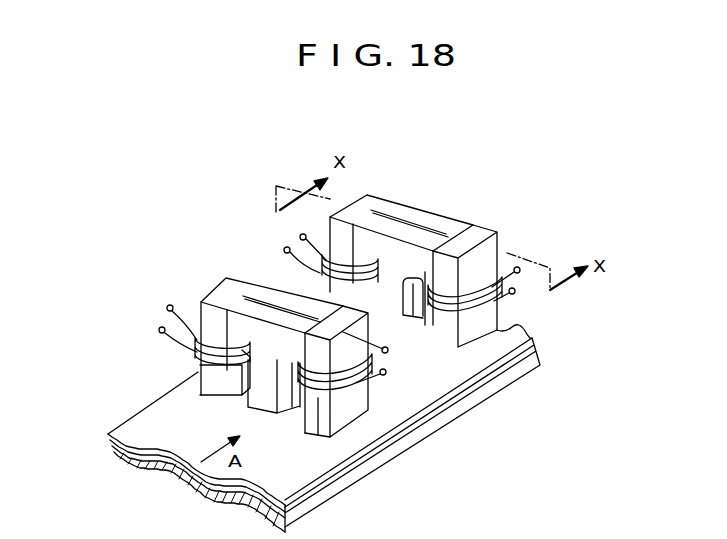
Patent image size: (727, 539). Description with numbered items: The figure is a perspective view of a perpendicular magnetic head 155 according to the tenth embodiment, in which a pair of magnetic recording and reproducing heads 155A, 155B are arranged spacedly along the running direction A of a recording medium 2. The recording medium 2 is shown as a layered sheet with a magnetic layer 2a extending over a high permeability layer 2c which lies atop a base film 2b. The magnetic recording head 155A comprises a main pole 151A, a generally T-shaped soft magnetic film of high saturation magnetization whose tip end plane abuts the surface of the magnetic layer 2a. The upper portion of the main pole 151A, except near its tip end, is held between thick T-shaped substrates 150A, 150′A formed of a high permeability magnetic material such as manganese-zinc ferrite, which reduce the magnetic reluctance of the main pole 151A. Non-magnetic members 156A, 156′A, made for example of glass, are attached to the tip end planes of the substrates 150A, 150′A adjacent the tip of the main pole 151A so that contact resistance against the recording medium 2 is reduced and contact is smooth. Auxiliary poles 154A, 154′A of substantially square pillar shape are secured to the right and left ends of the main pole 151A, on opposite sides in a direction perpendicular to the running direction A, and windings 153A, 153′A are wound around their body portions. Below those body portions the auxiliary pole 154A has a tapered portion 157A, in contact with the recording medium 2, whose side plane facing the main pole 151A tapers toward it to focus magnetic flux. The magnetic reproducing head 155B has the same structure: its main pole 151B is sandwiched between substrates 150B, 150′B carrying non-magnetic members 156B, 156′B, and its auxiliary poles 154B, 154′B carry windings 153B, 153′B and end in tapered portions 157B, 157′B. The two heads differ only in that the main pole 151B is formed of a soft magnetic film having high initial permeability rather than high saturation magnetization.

The recording medium 2 is at (307, 428).
The magnetic layer 2a is at (112, 433).
The base film 2b is at (122, 452).
The high permeability layer 2c is at (115, 442).
The perpendicular magnetic head 155 is at (238, 214).
The magnetic recording head 155A is at (373, 186).
The magnetic reproducing head 155B is at (196, 270).
The substrate 150A is at (461, 225).
The substrate 150′A is at (384, 224).
The main pole 151A is at (426, 228).
The winding 153A is at (520, 273).
The auxiliary pole 154A is at (494, 238).
The winding 153′A is at (300, 238).
The auxiliary pole 154′A is at (303, 233).
The non-magnetic member 156A is at (411, 290).
The non-magnetic member 156′A is at (390, 346).
The tapered portion 157A is at (318, 296).
The substrate 150B is at (253, 294).
The substrate 150′B is at (297, 320).
The main pole 151B is at (285, 314).
The winding 153B is at (350, 395).
The auxiliary pole 154B is at (384, 375).
The winding 153′B is at (166, 334).
The auxiliary pole 154′B is at (216, 299).
The non-magnetic member 156B is at (308, 400).
The non-magnetic member 156′B is at (262, 414).
The tapered portion 157B is at (318, 433).
The tapered portion 157′B is at (208, 386).